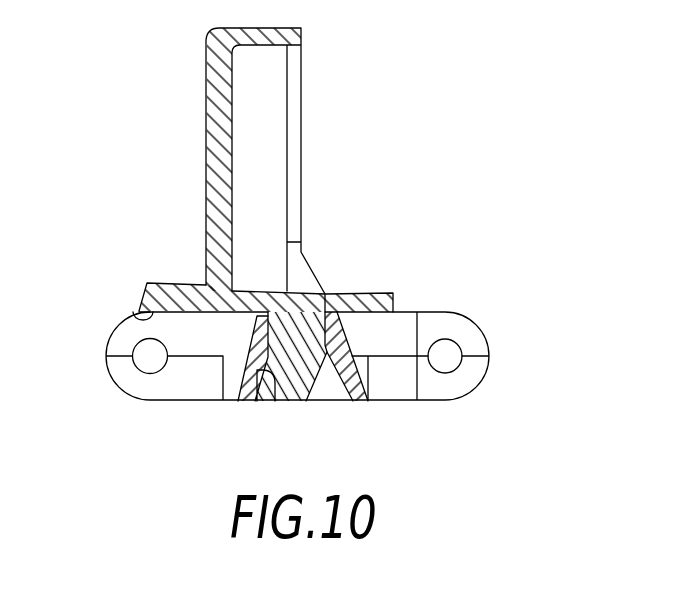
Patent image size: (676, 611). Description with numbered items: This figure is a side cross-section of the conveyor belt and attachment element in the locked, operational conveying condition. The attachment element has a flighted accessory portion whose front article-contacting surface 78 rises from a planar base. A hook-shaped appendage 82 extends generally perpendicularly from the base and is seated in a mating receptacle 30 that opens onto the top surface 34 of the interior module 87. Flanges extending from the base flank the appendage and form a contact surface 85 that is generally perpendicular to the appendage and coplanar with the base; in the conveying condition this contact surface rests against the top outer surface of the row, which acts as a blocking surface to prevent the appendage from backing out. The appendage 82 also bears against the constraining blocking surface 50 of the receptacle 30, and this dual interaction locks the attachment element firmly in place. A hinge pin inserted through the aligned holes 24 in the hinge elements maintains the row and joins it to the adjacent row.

The holes 24 is at (448, 360).
The mating receptacles 30 is at (328, 390).
The top surface 34 is at (407, 311).
The constraining blocking surfaces 50 is at (273, 386).
The front article-contacting surface 78 is at (207, 135).
The hook-shaped appendages 82 is at (262, 388).
The contact surface 85 is at (142, 313).
The interior module 87 is at (123, 338).